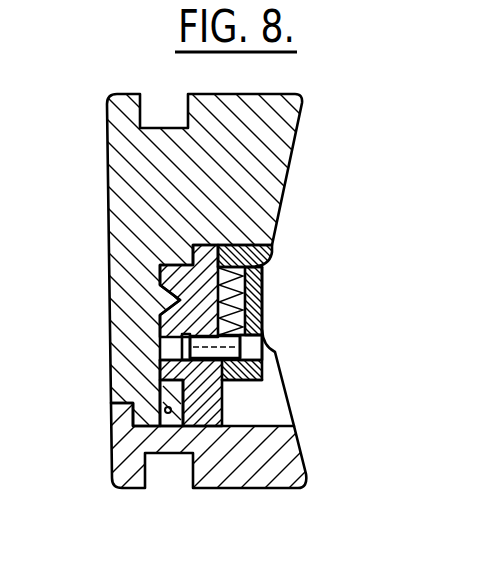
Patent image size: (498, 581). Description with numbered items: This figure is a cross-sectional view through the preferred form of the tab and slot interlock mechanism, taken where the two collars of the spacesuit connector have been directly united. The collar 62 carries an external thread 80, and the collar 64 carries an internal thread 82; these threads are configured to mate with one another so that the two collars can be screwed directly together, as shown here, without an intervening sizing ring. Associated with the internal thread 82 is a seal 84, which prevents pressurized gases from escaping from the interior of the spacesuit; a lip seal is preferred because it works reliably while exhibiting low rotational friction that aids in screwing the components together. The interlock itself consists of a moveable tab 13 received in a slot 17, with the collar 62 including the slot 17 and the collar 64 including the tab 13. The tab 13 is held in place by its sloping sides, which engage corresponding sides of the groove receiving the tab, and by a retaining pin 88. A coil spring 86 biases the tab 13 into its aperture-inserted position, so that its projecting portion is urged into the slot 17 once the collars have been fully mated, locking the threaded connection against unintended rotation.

The collar 62 is at (275, 140).
The collar 64 is at (277, 462).
The external thread 80 is at (172, 307).
The internal thread 82 is at (176, 326).
The seal 84 is at (188, 424).
The coil spring 86 is at (262, 305).
The retaining pin 88 is at (275, 353).
The tab 13 is at (262, 277).
The slot 17 is at (255, 245).